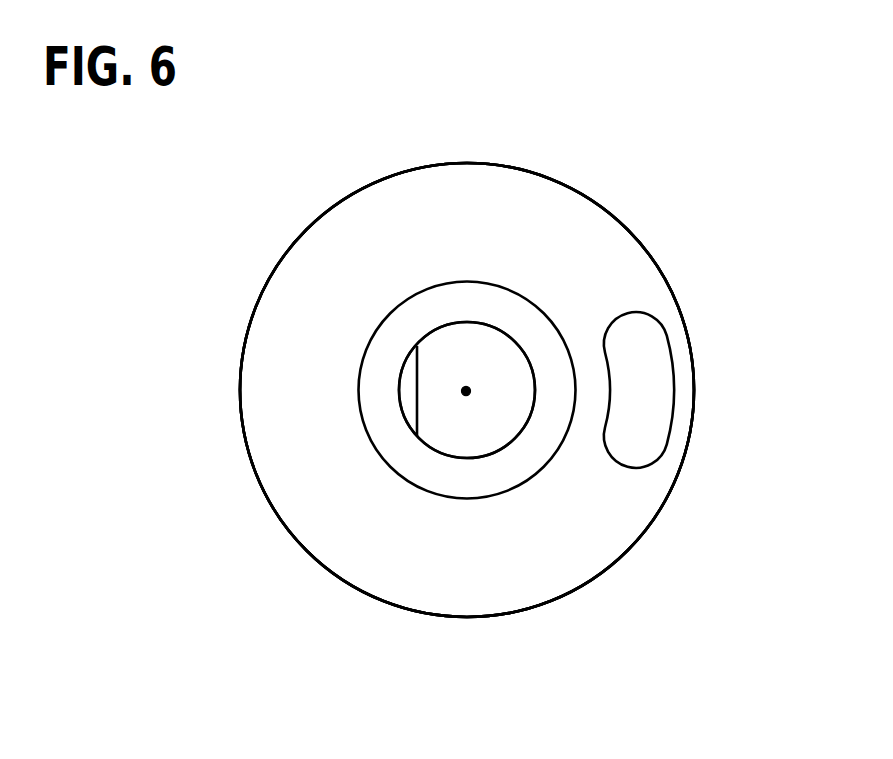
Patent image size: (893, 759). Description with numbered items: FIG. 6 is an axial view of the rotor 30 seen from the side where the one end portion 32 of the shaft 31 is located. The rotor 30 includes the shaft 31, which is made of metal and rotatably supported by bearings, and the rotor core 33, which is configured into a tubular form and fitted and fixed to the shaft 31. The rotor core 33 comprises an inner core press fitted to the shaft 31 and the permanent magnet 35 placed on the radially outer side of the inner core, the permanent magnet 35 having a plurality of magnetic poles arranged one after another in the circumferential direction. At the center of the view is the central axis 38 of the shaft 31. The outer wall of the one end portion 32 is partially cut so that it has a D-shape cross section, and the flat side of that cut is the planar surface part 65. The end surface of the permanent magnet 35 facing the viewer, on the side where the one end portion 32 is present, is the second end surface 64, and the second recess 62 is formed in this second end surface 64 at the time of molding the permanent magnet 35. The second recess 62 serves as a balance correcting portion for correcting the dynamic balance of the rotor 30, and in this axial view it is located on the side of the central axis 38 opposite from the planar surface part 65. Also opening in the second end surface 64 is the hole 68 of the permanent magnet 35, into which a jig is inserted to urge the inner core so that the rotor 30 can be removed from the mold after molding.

The rotor 30 is at (282, 225).
The shaft 31 is at (492, 325).
The one end portion 32 is at (490, 423).
The rotor core 33 is at (515, 613).
The permanent magnet 35 is at (425, 582).
The central axis 38 is at (465, 385).
The second recess 62 is at (640, 390).
The second end surface 64 is at (610, 502).
The planar surface part 65 is at (417, 391).
The hole 68 is at (465, 497).